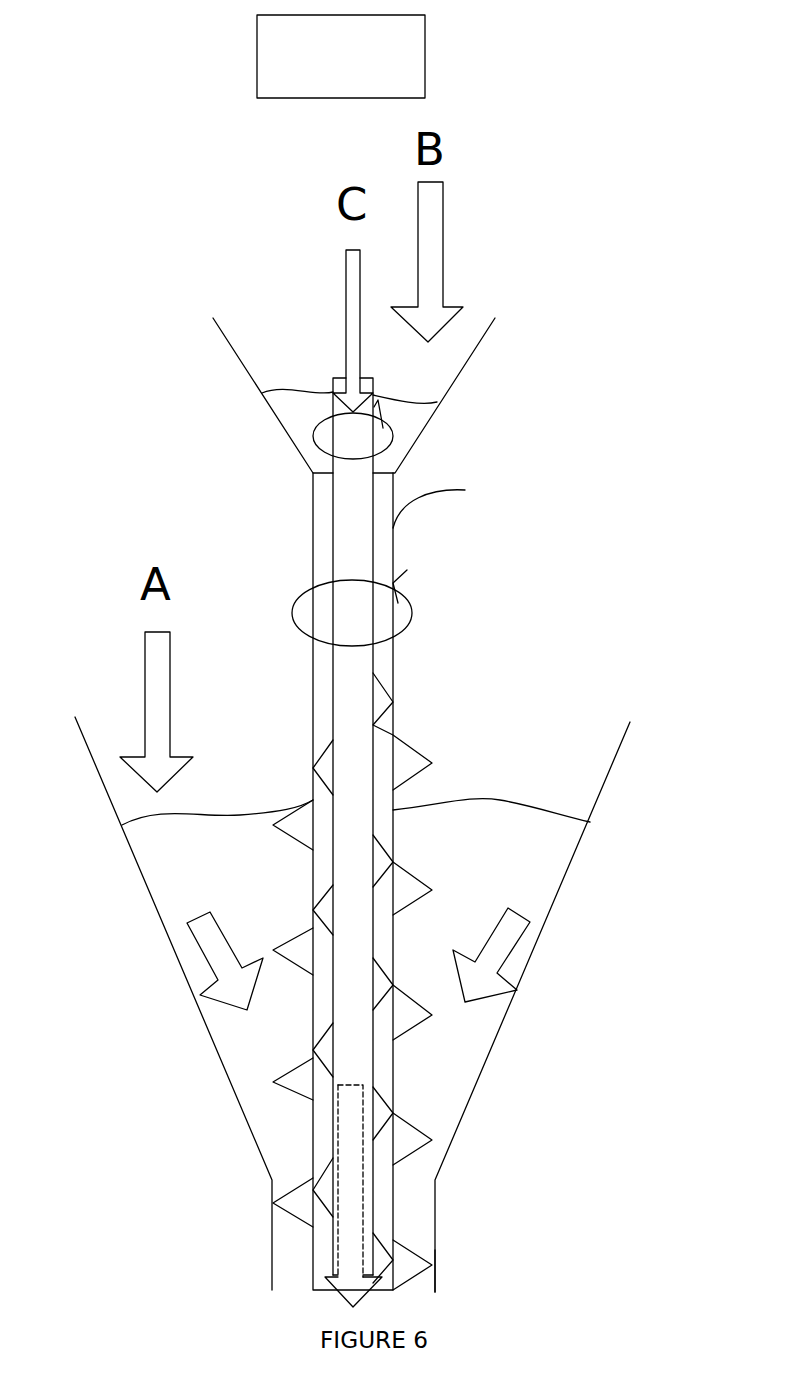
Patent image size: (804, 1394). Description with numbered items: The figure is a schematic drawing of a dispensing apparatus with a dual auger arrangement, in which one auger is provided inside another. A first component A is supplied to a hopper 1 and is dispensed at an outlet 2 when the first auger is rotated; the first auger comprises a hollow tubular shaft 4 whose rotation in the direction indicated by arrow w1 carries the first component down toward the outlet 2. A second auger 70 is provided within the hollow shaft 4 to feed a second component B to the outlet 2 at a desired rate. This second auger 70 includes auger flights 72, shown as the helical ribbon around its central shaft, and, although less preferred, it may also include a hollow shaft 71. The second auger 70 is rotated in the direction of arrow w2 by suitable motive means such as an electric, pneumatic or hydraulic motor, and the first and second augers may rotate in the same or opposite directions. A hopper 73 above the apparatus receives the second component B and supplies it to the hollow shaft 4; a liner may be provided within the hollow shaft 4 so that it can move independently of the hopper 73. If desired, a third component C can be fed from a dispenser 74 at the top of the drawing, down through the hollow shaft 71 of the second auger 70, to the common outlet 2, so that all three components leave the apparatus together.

The hopper 1 is at (560, 888).
The outlet 2 is at (435, 1287).
The hollow tubular shaft 4 is at (380, 729).
The second auger 70 is at (397, 727).
The hollow shaft 71 is at (393, 797).
The auger flights 72 is at (381, 842).
The hopper 73 is at (467, 362).
The dispenser 74 is at (380, 42).
The direction of rotation of shaft w1 is at (369, 603).
The direction of rotation of second auger w2 is at (340, 429).